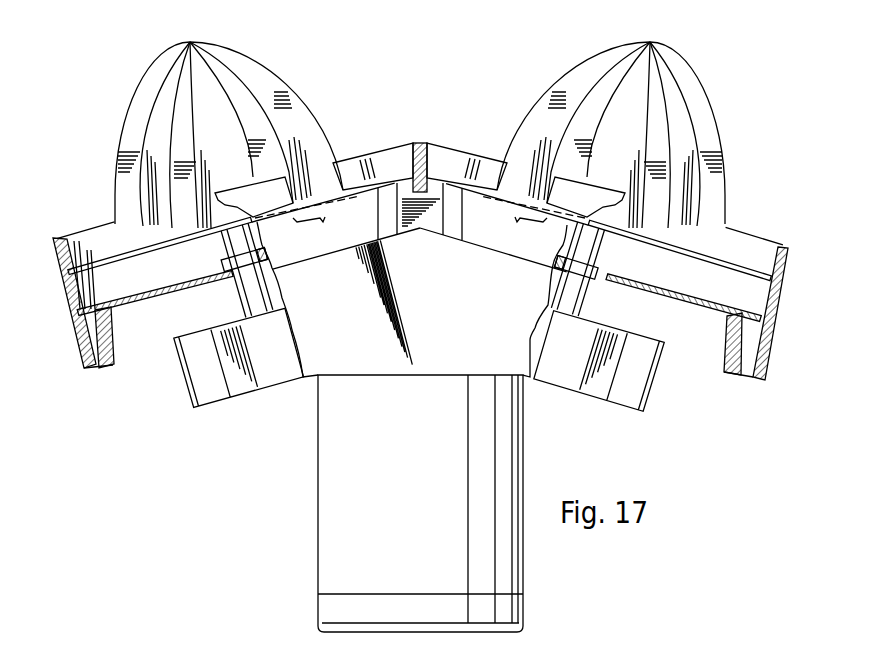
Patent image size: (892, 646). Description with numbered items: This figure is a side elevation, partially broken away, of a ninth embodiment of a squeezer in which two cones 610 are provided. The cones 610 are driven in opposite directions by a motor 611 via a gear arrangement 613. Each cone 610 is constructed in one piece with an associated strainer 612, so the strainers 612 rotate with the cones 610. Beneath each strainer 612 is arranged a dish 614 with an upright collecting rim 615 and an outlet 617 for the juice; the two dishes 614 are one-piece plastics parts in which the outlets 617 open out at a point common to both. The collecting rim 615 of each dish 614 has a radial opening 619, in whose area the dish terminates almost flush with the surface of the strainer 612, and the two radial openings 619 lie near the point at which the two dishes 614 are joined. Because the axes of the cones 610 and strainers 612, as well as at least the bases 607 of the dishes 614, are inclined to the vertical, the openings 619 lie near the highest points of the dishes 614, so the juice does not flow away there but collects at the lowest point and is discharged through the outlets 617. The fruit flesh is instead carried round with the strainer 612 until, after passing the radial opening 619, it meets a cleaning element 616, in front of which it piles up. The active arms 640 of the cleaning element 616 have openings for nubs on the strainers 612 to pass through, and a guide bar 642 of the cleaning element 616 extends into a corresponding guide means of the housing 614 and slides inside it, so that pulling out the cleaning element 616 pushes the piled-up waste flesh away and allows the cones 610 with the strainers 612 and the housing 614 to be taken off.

The base 607 is at (176, 295).
The cone 610 is at (273, 84).
The motor 611 is at (420, 503).
The strainer 612 is at (117, 260).
The gear arrangement 613 is at (230, 385).
The dish 614 is at (142, 283).
The collecting rim 615 is at (57, 237).
The cleaning element 616 is at (431, 139).
The outlet 617 is at (100, 368).
The radial opening 619 is at (420, 224).
The active arm 640 is at (380, 158).
The guide bar 642 is at (413, 142).